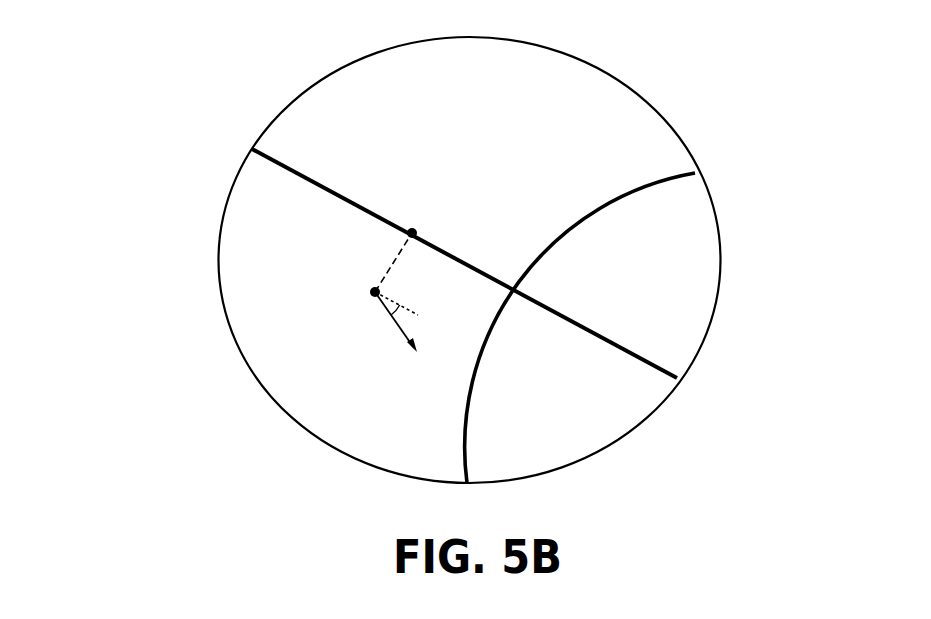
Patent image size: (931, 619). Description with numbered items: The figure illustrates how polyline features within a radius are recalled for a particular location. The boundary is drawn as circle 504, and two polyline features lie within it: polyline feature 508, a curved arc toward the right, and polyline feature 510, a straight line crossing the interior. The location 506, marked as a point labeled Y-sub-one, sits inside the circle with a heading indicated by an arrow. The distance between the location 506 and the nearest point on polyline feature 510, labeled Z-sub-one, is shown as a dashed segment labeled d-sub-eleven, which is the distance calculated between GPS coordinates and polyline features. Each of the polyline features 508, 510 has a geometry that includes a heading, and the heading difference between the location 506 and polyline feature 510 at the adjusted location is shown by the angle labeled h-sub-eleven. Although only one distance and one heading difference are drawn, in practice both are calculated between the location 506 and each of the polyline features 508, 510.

The circle 504 is at (642, 98).
The polyline feature 508 is at (648, 183).
The polyline feature 510 is at (325, 192).
The location 506 is at (372, 295).